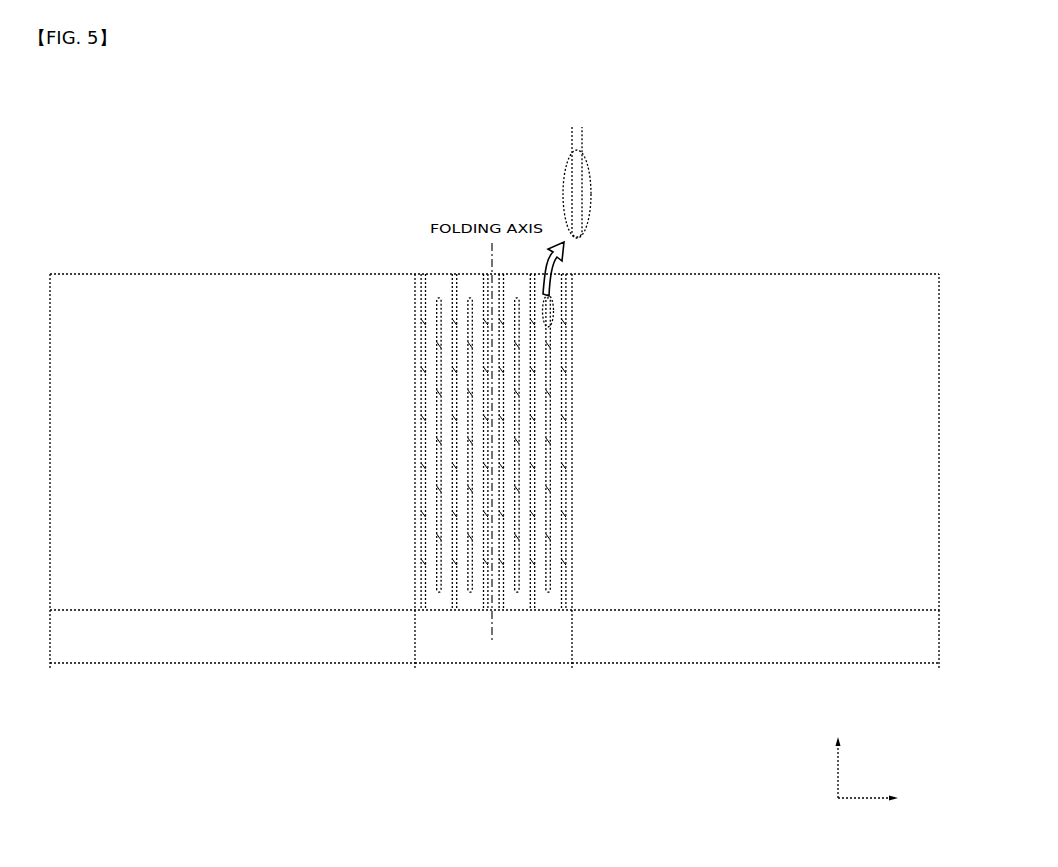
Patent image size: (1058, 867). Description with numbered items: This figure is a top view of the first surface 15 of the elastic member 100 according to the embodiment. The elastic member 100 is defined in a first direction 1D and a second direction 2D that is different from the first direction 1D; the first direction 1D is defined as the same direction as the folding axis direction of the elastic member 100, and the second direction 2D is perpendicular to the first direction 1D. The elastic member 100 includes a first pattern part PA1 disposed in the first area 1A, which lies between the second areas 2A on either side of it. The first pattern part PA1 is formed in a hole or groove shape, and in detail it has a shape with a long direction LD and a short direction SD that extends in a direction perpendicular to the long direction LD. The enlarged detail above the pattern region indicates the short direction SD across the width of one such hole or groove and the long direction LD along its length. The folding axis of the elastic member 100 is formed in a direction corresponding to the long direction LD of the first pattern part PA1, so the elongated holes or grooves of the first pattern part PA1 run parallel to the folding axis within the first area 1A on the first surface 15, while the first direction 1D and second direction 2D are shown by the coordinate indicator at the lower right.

The elastic member 100 is at (902, 282).
The first surface 15 is at (847, 292).
The first pattern part PA1 is at (415, 330).
The short direction SD is at (556, 127).
The long direction LD is at (607, 150).
The first area 1A is at (415, 663).
The second area 2A is at (939, 663).
The first direction 1D is at (840, 757).
The second direction 2D is at (881, 799).